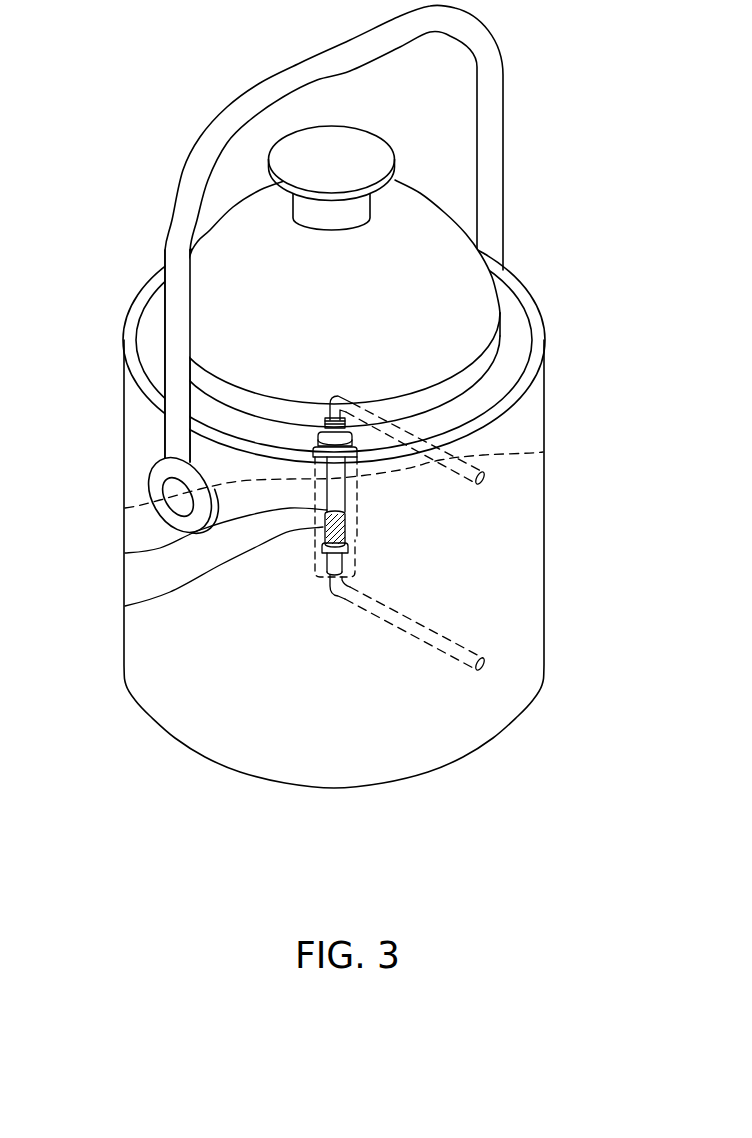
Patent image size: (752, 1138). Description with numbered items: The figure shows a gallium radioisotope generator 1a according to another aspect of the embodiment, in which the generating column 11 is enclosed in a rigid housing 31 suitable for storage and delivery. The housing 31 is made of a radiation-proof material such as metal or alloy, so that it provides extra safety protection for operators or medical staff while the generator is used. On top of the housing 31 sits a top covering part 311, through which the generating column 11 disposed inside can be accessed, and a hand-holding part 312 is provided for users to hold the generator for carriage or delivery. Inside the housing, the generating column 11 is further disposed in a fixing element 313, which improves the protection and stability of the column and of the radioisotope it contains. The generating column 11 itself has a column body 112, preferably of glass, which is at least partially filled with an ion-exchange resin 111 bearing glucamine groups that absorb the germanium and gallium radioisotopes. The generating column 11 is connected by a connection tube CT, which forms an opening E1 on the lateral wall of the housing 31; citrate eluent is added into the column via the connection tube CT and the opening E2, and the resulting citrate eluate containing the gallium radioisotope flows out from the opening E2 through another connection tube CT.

The electrolytic device 1a is at (108, 68).
The housing 31 is at (550, 380).
The top covering part 311 is at (440, 292).
The hand-holding part 312 is at (493, 165).
The fixing element 313 is at (125, 508).
The generating column 11 is at (348, 495).
The ion-exchange resin 111 is at (125, 606).
The column body 112 is at (125, 553).
The connection tube CT is at (543, 452).
The opening E1 is at (485, 483).
The opening E2 is at (485, 668).